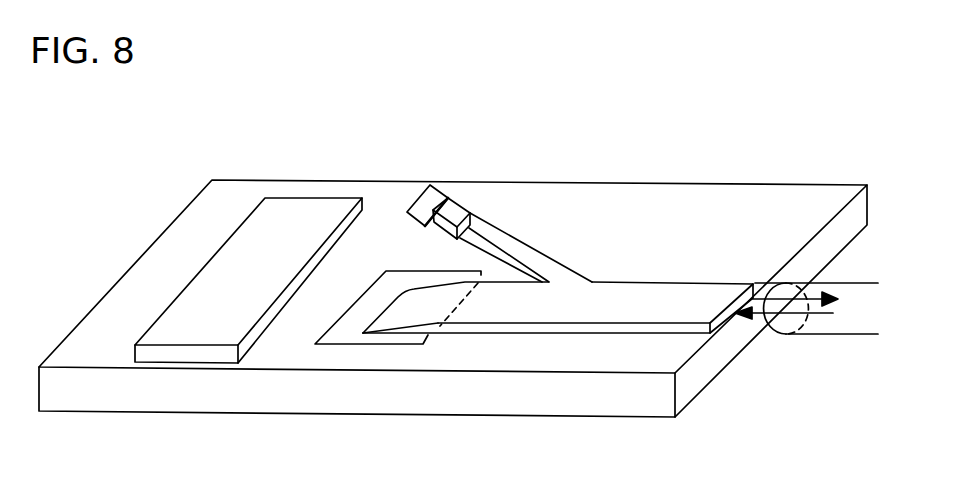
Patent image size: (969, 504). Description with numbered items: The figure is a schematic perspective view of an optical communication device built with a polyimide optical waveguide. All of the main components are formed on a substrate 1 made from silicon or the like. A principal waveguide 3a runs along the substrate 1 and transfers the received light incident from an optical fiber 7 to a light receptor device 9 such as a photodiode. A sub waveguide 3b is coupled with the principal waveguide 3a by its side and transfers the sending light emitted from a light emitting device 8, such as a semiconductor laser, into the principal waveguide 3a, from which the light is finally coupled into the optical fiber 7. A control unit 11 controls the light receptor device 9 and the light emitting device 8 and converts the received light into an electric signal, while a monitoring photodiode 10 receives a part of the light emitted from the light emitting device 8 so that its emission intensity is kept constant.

The substrate 1 is at (490, 400).
The principal waveguide 3a is at (688, 293).
The sub waveguide 3b is at (529, 247).
The optical fiber 7 is at (865, 328).
The light emitting device 8 is at (457, 209).
The light receptor device 9 is at (343, 338).
The monitoring photodiode 10 is at (432, 187).
The control unit 11 is at (307, 207).